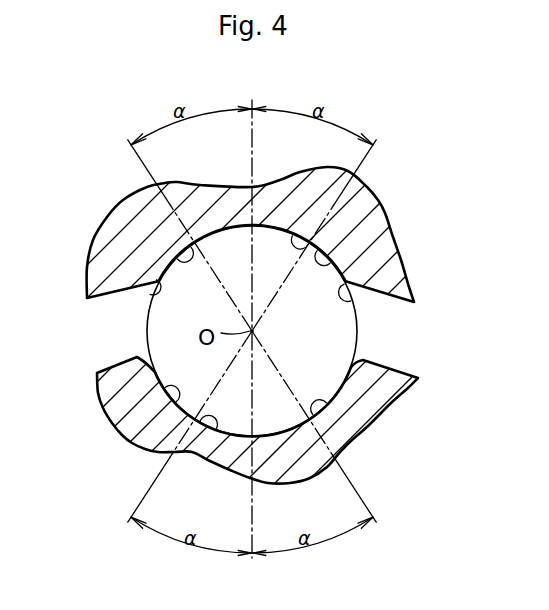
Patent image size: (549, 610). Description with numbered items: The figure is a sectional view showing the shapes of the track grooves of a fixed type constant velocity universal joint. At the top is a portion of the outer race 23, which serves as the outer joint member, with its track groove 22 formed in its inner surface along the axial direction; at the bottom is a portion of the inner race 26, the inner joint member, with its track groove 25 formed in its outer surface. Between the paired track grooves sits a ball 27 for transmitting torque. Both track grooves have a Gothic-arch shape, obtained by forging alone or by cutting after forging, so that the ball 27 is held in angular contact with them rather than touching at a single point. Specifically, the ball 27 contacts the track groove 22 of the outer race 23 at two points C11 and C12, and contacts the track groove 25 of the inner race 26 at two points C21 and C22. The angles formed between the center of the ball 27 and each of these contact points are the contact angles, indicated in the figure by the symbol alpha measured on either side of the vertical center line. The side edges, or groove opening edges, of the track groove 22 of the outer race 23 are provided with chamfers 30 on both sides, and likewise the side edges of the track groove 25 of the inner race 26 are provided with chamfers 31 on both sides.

The track groove of the outer race 22 is at (345, 238).
The outer race 23 is at (380, 260).
The track groove of the inner race 25 is at (122, 427).
The inner race 26 is at (378, 392).
The ball 27 is at (165, 334).
The chamfer 30 is at (138, 285).
The chamfer 31 is at (138, 356).
The contact point C11 is at (281, 228).
The contact point C12 is at (138, 284).
The contact point C21 is at (330, 398).
The contact point C22 is at (213, 432).